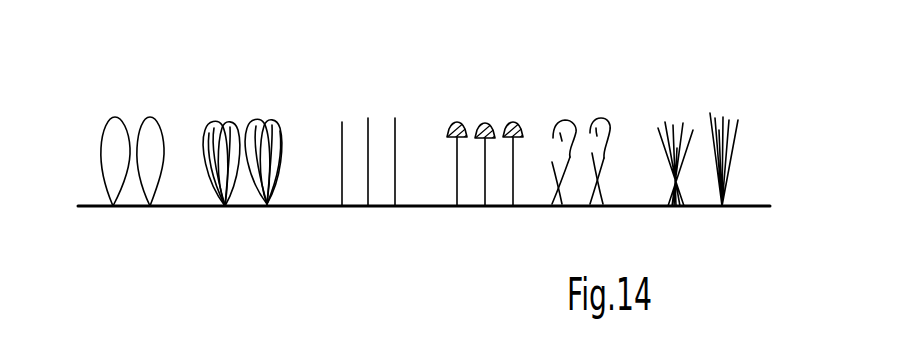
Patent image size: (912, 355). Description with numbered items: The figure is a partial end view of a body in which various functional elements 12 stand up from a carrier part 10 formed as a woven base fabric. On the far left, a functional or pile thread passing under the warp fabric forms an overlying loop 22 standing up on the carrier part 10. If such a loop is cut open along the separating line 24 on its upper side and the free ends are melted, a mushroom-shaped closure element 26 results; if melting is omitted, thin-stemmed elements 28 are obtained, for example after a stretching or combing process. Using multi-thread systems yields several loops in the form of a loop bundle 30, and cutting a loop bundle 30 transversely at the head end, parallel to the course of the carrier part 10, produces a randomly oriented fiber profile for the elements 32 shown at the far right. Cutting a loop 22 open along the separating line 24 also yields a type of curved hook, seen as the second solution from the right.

The carrier part 10 is at (762, 208).
The functional elements 12 is at (158, 120).
The loop 22 is at (147, 117).
The separating line 24 is at (600, 148).
The mushroom-shaped closure element 26 is at (462, 123).
The thin-stemmed elements 28 is at (343, 122).
The loop bundle 30 is at (250, 147).
The elements with randomly oriented fiber profile 32 is at (672, 127).